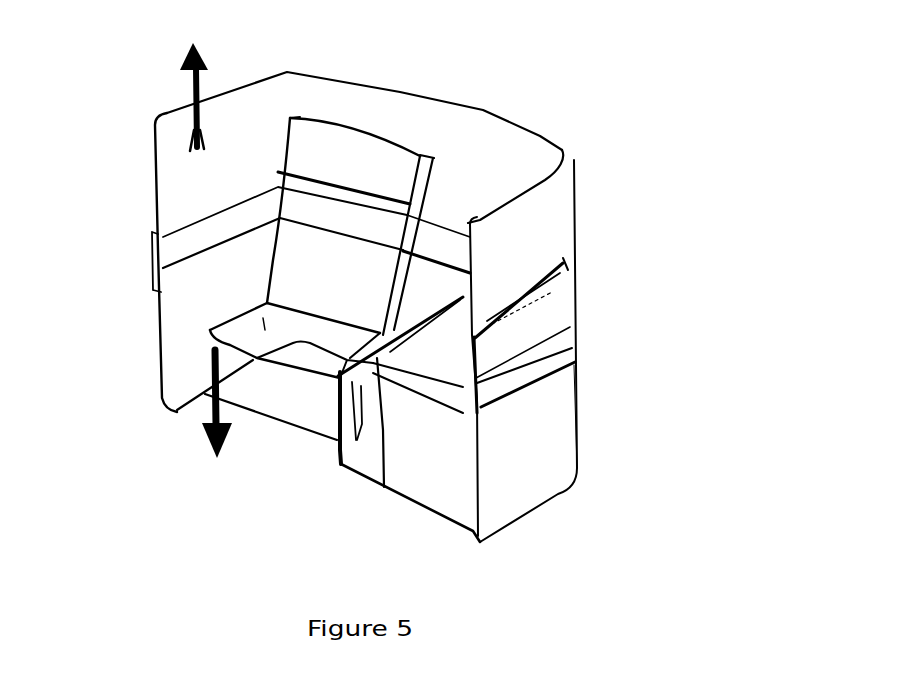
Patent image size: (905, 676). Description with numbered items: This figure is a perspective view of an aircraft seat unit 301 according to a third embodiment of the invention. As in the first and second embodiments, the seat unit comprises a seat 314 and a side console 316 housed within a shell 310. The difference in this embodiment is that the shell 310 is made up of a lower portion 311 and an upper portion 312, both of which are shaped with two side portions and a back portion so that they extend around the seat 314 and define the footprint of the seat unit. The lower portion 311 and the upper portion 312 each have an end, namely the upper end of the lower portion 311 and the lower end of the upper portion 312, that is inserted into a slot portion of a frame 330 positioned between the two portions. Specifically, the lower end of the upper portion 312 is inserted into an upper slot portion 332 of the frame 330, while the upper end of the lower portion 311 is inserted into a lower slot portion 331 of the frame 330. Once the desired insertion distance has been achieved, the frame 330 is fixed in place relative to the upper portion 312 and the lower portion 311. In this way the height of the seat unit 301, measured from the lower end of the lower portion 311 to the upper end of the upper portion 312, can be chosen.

The aircraft seat unit 301 is at (615, 310).
The shell 310 is at (357, 232).
The lower portion 311 is at (611, 435).
The upper portion 312 is at (564, 266).
The seat 314 is at (275, 468).
The side console 316 is at (405, 477).
The frame 330 is at (542, 343).
The lower slot portion 331 is at (601, 384).
The upper slot portion 332 is at (605, 294).